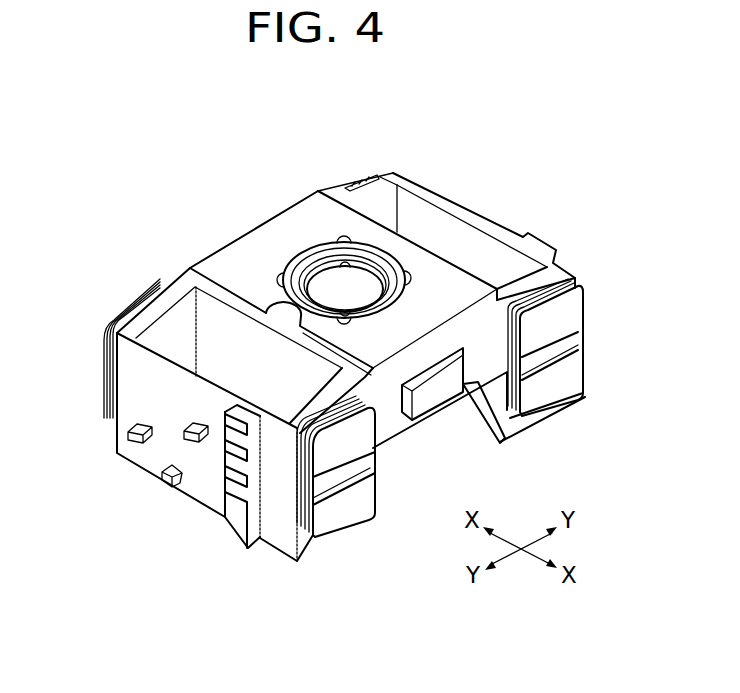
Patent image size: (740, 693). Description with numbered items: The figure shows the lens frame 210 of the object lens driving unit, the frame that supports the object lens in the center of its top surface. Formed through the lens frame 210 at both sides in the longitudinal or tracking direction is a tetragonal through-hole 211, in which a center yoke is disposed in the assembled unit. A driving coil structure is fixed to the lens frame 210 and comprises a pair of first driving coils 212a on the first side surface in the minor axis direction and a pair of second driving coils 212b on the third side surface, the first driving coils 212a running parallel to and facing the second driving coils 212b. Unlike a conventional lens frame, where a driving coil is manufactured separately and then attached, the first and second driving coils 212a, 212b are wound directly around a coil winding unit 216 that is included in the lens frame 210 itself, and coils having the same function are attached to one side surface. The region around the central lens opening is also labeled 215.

The lens frame 210 is at (320, 168).
The tetragonal through-hole 211 is at (216, 337).
The first driving coils 212a is at (372, 176).
The second driving coils 212b is at (575, 277).
The lens through hole 215 is at (325, 290).
The coil winding unit 216 is at (347, 512).